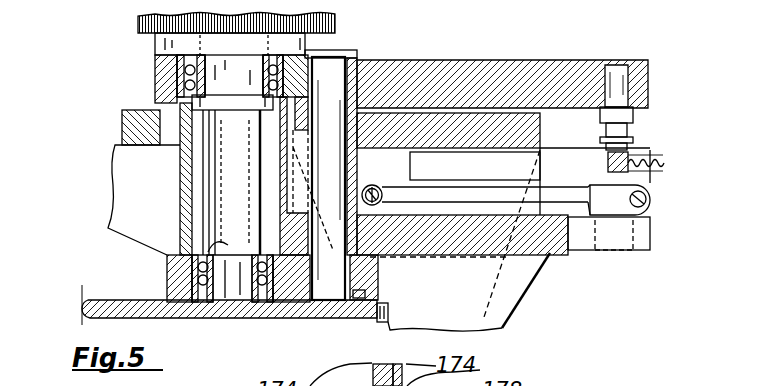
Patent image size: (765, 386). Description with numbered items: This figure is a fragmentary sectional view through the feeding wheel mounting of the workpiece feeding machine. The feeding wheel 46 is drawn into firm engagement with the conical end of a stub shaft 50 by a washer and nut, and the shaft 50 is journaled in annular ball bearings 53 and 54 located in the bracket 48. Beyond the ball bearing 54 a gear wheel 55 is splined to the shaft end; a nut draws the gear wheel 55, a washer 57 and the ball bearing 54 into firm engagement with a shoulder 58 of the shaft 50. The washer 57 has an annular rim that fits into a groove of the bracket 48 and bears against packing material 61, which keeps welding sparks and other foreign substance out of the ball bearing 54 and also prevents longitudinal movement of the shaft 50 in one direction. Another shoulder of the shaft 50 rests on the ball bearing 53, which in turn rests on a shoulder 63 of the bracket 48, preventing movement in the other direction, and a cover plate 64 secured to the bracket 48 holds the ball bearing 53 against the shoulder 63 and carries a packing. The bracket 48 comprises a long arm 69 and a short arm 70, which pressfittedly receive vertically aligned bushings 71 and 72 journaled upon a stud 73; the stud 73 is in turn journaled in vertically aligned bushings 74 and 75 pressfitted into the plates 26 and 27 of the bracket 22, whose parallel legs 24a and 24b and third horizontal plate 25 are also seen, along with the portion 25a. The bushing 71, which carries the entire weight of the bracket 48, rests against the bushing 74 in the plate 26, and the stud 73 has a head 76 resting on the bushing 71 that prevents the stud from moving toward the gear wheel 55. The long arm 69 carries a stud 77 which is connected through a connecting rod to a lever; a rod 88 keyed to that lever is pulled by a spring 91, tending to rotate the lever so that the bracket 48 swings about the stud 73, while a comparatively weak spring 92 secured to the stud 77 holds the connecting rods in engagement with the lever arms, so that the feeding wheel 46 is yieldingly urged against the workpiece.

The bracket 22 is at (510, 312).
The leg 24a is at (513, 292).
The leg 24b is at (503, 330).
The horizontal plate 25 is at (536, 133).
The passage 25a is at (478, 163).
The horizontal plate 26 is at (125, 122).
The horizontal plate 27 is at (548, 253).
The feeding wheel 46 is at (138, 22).
The bracket 48 is at (180, 163).
The stub shaft 50 is at (213, 182).
The ball bearing 53 is at (185, 75).
The ball bearing 54 is at (263, 290).
The gear wheel 55 is at (353, 320).
The washer 57 is at (283, 292).
The shoulder 58 is at (233, 250).
The packing material 61 is at (187, 290).
The shoulder 63 is at (157, 101).
The cover plate 64 is at (163, 43).
The long arm 69 is at (453, 62).
The short arm 70 is at (378, 283).
The bushing 71 is at (357, 78).
The bushing 72 is at (373, 292).
The stud 73 is at (325, 165).
The bushing 74 is at (310, 123).
The bushing 75 is at (283, 217).
The head 76 is at (345, 55).
The stud 77 is at (613, 75).
The rod 88 is at (652, 200).
The spring 91 is at (372, 186).
The spring 92 is at (663, 163).